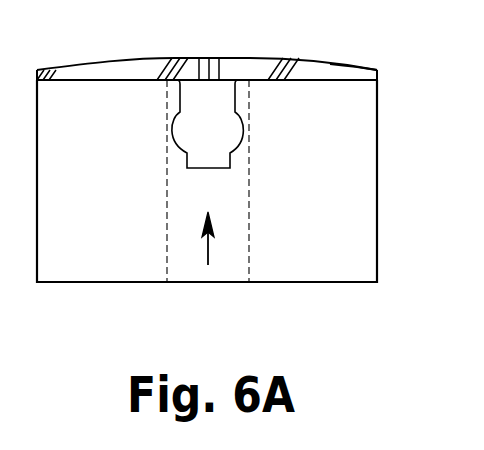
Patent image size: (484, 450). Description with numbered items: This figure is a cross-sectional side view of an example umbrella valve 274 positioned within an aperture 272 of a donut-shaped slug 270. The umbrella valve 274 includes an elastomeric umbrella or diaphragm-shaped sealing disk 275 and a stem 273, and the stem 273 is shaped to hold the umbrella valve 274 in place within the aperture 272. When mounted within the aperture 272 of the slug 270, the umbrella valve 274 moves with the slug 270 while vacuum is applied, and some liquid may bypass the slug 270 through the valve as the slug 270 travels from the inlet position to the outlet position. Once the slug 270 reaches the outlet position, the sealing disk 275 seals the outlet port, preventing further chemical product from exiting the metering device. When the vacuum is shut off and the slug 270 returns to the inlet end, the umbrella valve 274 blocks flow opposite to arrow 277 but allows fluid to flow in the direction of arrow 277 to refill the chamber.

The donut-shaped slug 270 is at (377, 188).
The aperture 272 is at (249, 245).
The stem 273 is at (237, 128).
The umbrella valve 274 is at (250, 58).
The sealing disk 275 is at (377, 70).
The arrow 277 is at (203, 249).